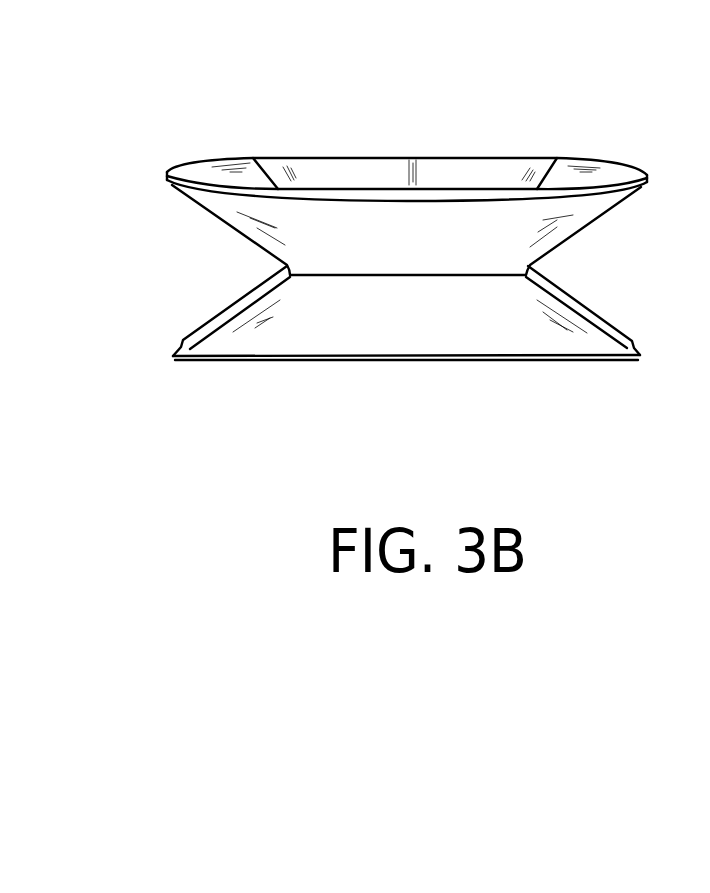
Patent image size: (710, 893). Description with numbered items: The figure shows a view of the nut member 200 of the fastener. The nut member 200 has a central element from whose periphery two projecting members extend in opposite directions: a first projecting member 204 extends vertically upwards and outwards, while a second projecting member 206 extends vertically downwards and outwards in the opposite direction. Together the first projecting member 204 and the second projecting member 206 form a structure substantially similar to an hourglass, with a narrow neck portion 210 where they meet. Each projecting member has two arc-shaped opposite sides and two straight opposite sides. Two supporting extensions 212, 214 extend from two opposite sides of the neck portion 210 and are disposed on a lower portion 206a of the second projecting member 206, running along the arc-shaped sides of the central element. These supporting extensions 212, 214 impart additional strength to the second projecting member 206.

The nut member 200 is at (407, 236).
The first projecting member 204 is at (473, 158).
The second projecting member 206 is at (388, 360).
The lower portion of the second projecting member 206a is at (272, 340).
The neck portion 210 is at (530, 270).
The supporting extension 212 is at (213, 317).
The supporting extension 214 is at (598, 312).